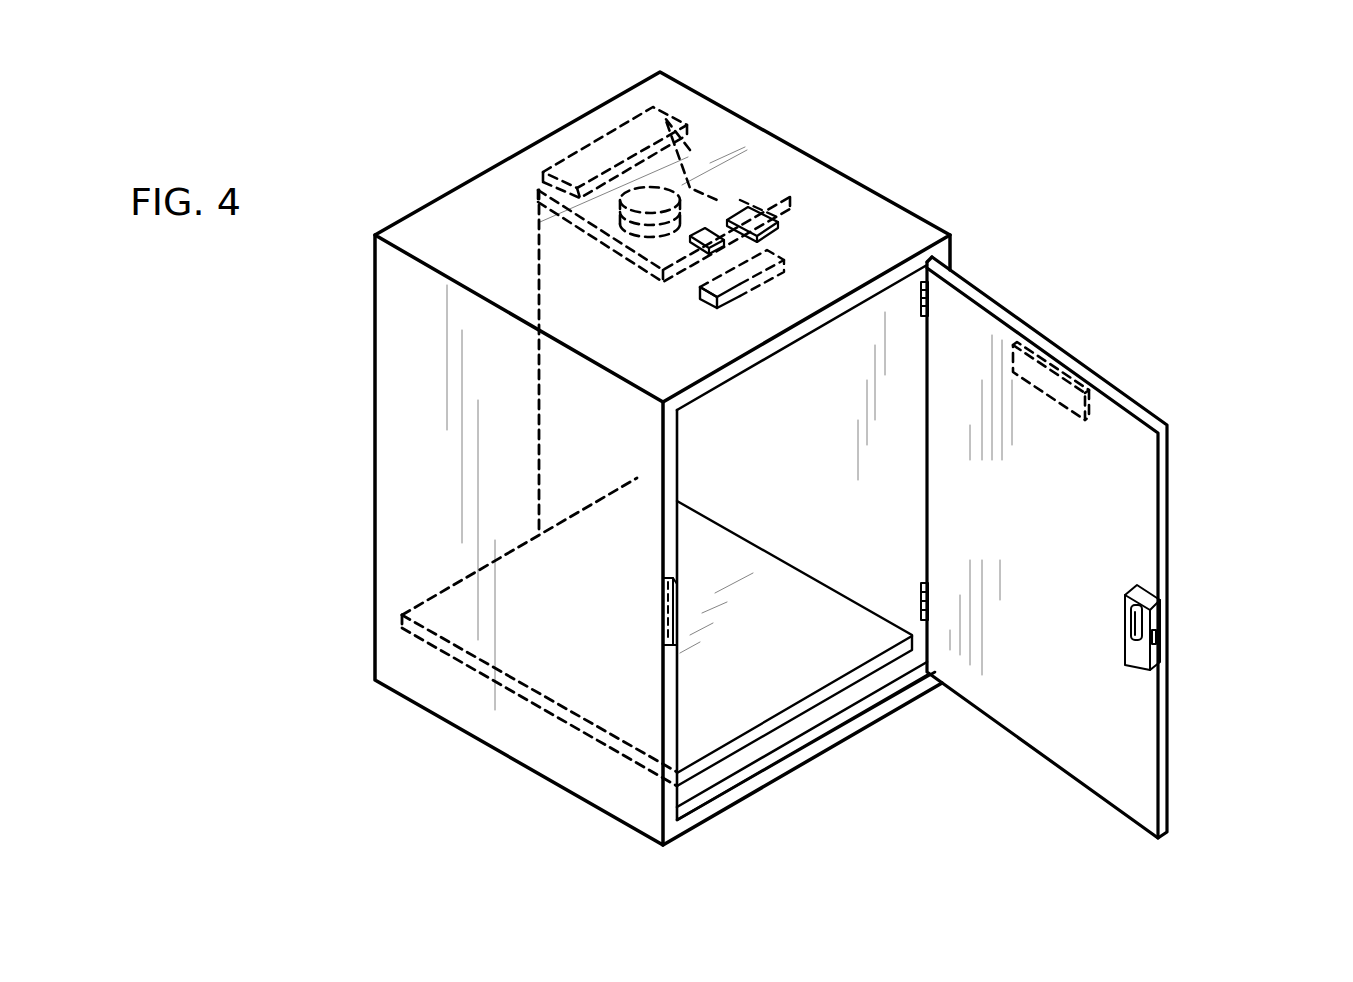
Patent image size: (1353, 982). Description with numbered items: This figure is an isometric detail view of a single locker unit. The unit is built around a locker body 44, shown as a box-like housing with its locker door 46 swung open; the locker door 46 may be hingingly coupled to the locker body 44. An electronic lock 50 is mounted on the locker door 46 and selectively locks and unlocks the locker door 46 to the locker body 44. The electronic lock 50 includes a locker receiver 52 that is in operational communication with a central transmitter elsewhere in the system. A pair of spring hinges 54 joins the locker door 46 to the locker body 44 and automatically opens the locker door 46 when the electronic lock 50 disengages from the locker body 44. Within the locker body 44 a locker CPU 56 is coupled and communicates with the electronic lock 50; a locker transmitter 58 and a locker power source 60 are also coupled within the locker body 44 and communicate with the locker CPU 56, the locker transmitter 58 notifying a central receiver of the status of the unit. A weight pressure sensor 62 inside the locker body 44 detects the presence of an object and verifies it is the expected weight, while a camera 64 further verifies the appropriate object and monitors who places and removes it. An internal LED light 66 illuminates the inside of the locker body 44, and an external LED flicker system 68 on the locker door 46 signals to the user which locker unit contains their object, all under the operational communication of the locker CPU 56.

The locker body 44 is at (418, 532).
The locker door 46 is at (1137, 430).
The electronic lock 50 is at (1145, 622).
The locker receiver 52 is at (707, 233).
The spring hinges 54 is at (927, 298).
The locker CPU 56 is at (630, 267).
The locker transmitter 58 is at (748, 214).
The locker power source 60 is at (590, 163).
The weight pressure sensor 62 is at (747, 707).
The camera 64 is at (657, 197).
The internal LED light 66 is at (777, 268).
The external LED flicker system 68 is at (1050, 378).